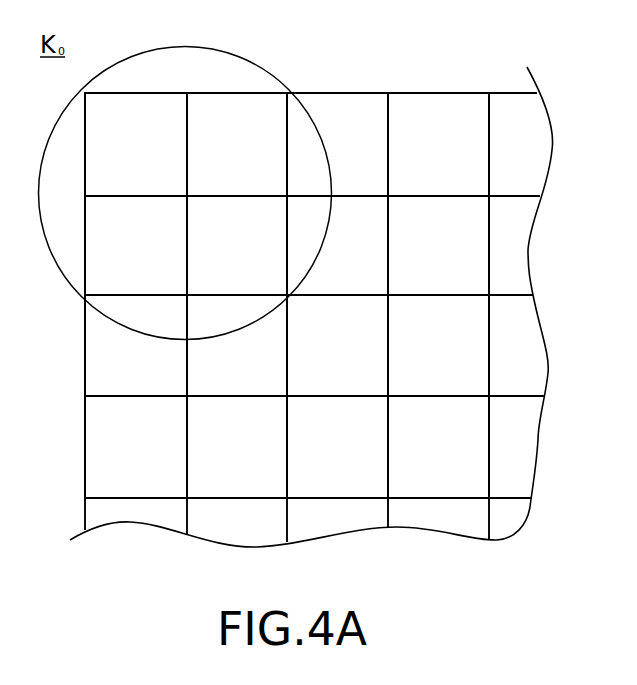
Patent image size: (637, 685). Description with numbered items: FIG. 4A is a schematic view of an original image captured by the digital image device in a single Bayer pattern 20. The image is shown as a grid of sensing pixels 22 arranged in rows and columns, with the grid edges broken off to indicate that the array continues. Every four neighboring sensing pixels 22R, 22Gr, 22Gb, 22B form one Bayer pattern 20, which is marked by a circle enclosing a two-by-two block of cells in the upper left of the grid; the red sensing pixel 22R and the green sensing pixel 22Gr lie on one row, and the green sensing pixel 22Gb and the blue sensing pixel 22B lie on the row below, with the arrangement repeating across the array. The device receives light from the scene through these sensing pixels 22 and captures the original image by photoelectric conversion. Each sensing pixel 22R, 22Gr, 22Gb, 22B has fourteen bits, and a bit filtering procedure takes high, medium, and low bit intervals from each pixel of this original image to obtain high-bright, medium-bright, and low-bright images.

The Bayer pattern 20 is at (243, 56).
The sensing pixel 22 is at (311, 307).
The red sensing pixel 22R is at (236, 244).
The green (red-row) sensing pixel 22Gr is at (338, 244).
The green (blue-row) sensing pixel 22Gb is at (236, 347).
The blue sensing pixel 22B is at (338, 347).